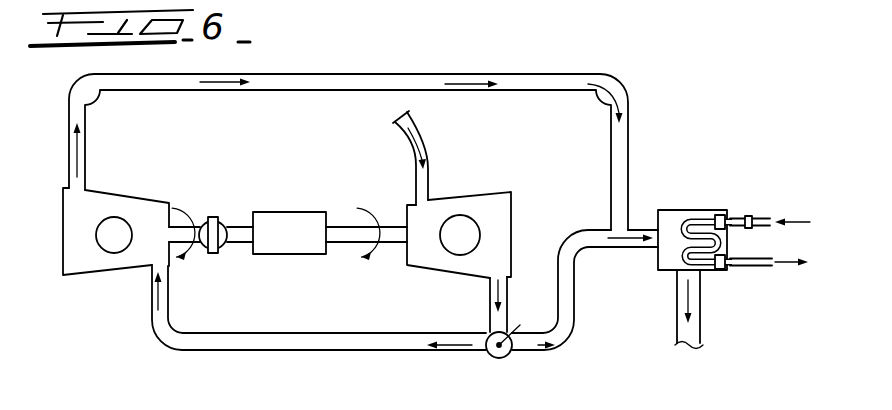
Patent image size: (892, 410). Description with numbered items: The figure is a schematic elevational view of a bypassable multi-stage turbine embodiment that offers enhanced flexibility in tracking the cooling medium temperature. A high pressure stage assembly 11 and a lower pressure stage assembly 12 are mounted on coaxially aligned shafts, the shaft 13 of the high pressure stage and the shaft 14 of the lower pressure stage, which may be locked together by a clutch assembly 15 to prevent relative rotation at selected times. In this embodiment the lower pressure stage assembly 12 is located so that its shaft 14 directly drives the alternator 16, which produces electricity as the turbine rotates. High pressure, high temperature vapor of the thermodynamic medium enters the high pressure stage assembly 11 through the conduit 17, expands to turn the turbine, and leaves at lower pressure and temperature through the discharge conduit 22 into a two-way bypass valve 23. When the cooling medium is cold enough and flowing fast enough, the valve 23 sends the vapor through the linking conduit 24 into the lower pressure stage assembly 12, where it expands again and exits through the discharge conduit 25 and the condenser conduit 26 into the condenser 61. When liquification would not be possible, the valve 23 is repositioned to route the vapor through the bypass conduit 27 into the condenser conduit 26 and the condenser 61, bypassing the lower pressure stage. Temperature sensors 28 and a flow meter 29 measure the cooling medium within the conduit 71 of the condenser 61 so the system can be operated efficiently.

The high pressure stage assembly 11 is at (470, 193).
The lower pressure stage assembly 12 is at (113, 194).
The shaft 13 is at (345, 227).
The shaft 14 is at (172, 243).
The clutch assembly 15 is at (203, 217).
The alternator 16 is at (302, 212).
The conduit 17 is at (421, 135).
The discharge conduit 22 is at (507, 302).
The two-way bypass valve 23 is at (507, 354).
The linking conduit 24 is at (333, 333).
The discharge conduit 25 is at (85, 147).
The condenser conduit 26 is at (638, 230).
The bypass conduit 27 is at (574, 288).
The temperature sensors 28 is at (717, 215).
The flow meter 29 is at (748, 216).
The condenser 61 is at (680, 210).
The conduit 71 is at (757, 267).